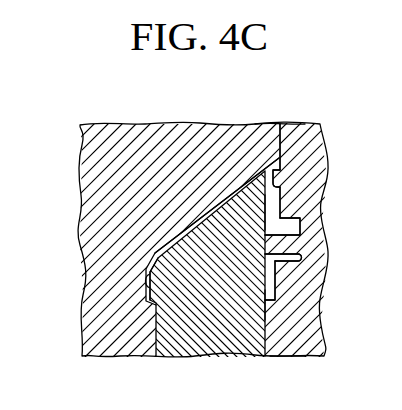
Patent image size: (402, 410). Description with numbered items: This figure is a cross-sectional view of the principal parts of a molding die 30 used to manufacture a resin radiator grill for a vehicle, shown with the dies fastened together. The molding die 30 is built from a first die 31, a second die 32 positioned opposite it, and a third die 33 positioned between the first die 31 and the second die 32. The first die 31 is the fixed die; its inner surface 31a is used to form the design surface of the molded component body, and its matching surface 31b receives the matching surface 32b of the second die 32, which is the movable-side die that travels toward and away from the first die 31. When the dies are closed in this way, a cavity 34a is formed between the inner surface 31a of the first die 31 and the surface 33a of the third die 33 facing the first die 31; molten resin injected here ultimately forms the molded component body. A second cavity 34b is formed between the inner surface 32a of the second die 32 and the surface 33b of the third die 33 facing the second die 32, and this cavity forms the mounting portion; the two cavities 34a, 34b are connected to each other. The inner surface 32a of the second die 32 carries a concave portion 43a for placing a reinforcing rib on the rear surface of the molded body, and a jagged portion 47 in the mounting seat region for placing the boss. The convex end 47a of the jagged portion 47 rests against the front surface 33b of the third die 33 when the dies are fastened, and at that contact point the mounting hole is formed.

The molding die 30 is at (281, 105).
The first die 31 is at (96, 256).
The inner surface of the first die 31a is at (148, 288).
The matching surface of the first die 31b is at (283, 126).
The second die 32 is at (316, 178).
The inner surface of the second die 32a is at (282, 197).
The matching surface of the second die 32b is at (278, 161).
The third die 33 is at (226, 357).
The surface of the third die facing the first die 33a is at (158, 254).
The surface of the third die facing the second die 33b is at (277, 307).
The cavity 34a is at (210, 212).
The cavity 34b is at (274, 219).
The concave portion 43a is at (277, 172).
The jagged portion 47 is at (301, 257).
The convex end of the jagged portion 47a is at (287, 357).